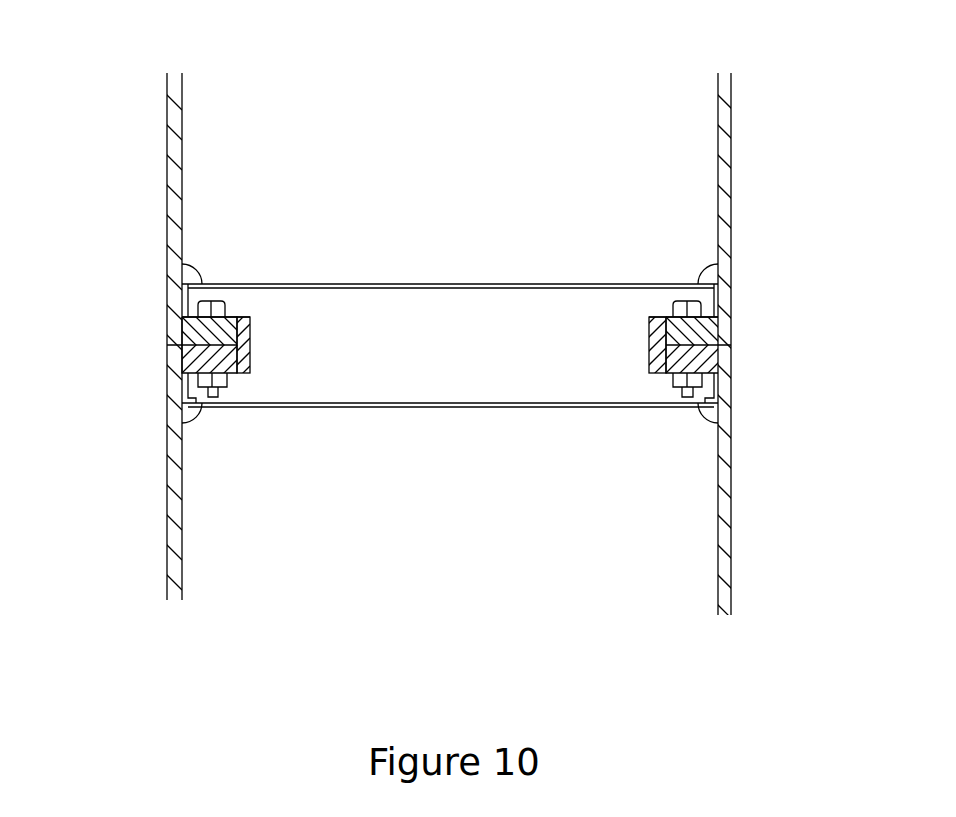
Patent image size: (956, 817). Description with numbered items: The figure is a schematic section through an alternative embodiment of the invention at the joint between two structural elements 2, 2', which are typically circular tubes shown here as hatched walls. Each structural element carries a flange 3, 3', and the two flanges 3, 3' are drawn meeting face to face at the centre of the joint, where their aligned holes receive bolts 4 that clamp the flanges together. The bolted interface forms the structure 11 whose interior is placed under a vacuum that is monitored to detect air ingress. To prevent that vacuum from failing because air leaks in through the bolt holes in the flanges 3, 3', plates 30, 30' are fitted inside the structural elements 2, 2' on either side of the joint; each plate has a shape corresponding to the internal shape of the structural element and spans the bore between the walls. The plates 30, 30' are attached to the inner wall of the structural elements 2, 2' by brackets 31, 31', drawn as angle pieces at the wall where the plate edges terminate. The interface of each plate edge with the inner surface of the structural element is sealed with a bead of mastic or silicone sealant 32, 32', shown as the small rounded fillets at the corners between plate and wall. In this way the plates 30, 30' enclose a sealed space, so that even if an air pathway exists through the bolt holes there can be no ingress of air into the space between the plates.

The structural element 2 is at (395, 211).
The structural element 2' is at (395, 482).
The flange 3 is at (400, 312).
The flange 3' is at (401, 394).
The bolt 4 is at (215, 304).
The structure 11 is at (649, 334).
The plate 30 is at (450, 215).
The plate 30' is at (450, 454).
The bracket 31 is at (516, 310).
The bracket 31' is at (451, 415).
The sealant 32 is at (511, 223).
The sealant 32' is at (512, 466).